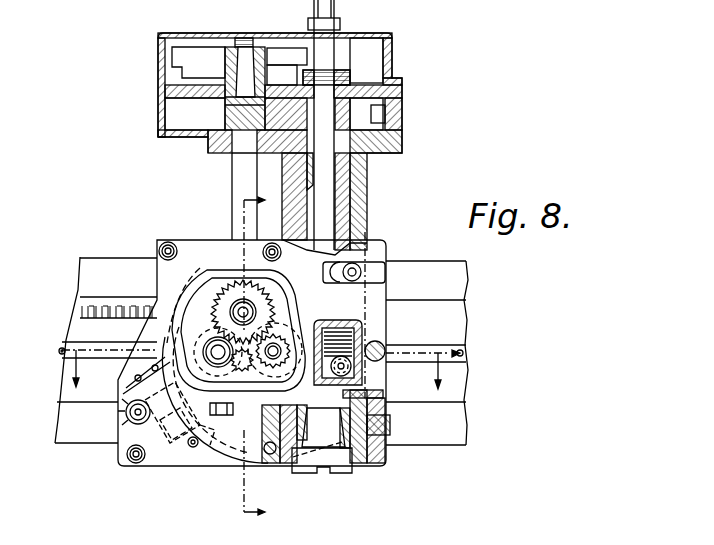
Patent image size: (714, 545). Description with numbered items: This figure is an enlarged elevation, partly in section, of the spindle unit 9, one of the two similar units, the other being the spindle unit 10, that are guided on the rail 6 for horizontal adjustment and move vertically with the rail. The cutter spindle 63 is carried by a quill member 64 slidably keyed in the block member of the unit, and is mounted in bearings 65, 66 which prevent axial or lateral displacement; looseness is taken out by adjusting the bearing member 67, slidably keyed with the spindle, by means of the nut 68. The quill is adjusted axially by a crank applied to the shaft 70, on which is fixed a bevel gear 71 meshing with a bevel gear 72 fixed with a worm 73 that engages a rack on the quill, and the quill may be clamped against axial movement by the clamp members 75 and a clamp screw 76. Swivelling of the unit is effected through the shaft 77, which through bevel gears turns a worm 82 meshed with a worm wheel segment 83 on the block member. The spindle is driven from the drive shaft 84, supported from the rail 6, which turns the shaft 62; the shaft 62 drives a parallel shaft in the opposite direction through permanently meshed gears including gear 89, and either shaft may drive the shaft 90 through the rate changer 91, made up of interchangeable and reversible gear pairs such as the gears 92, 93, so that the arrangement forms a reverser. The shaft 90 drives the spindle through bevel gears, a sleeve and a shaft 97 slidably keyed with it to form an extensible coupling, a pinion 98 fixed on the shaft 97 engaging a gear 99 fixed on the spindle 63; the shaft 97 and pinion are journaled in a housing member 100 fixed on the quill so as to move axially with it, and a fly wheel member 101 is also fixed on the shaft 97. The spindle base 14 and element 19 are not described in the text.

The rail 6 is at (444, 446).
The spindle unit 9 is at (266, 374).
The spindle unit 10 is at (269, 353).
The spindle base 14 is at (323, 427).
The shaft 19 is at (165, 447).
The shaft 62 is at (281, 340).
The cutter spindle 63 is at (336, 185).
The quill member 64 is at (352, 218).
The bearing 65 is at (366, 440).
The bearing 66 is at (354, 188).
The bearing member 67 is at (378, 160).
The nut 68 is at (352, 80).
The shaft 70 is at (356, 380).
The bevel gear 71 is at (368, 367).
The bevel gear 72 is at (387, 355).
The worm 73 is at (338, 329).
The clamp member 75 is at (381, 275).
The clamp screw 76 is at (353, 268).
The shaft 77 is at (128, 430).
The worm 82 is at (178, 447).
The worm wheel segment 83 is at (213, 442).
The drive shaft 84 is at (60, 352).
The gear 89 is at (241, 374).
The shaft 90 is at (250, 309).
The rate changer 91 is at (276, 299).
The gear 92 is at (262, 364).
The gear 93 is at (230, 291).
The shaft 97 is at (235, 183).
The pinion 98 is at (228, 113).
The gear 99 is at (396, 111).
The housing member 100 is at (403, 136).
The fly wheel member 101 is at (197, 58).